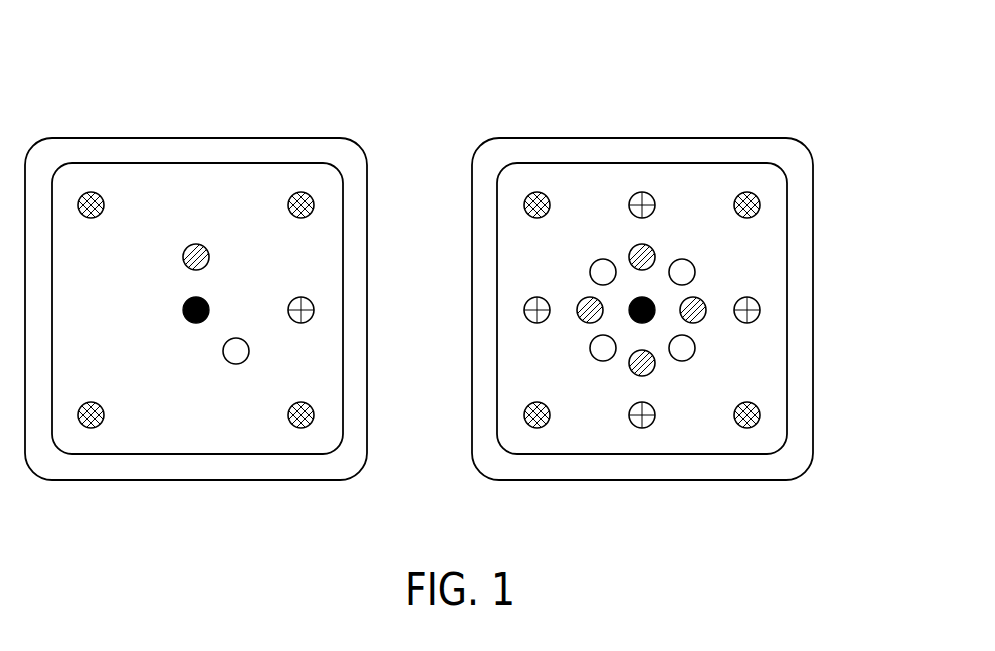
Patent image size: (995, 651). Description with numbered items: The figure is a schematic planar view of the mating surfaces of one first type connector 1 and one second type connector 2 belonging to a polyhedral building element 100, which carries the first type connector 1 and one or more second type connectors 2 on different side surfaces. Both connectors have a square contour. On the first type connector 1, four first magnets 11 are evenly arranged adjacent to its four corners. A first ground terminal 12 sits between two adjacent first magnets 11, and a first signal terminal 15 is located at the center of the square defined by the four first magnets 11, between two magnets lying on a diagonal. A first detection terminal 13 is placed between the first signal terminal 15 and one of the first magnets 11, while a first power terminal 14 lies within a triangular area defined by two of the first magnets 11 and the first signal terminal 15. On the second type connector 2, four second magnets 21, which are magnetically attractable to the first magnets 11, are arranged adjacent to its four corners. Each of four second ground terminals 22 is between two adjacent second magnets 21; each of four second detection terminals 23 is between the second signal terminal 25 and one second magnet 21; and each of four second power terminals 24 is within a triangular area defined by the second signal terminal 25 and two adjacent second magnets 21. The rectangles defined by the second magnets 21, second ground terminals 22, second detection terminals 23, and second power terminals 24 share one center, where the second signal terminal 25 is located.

The building element 100 is at (483, 78).
The first type connector 1 is at (197, 138).
The first magnets 11 is at (314, 201).
The first ground terminal 12 is at (314, 306).
The first detection terminal 13 is at (234, 351).
The first power terminal 14 is at (209, 251).
The first signal terminal 15 is at (207, 301).
The second type connector 2 is at (642, 138).
The second magnets 21 is at (760, 201).
The second ground terminals 22 is at (760, 306).
The second detection terminals 23 is at (680, 348).
The second power terminals 24 is at (655, 251).
The second signal terminal 25 is at (653, 301).